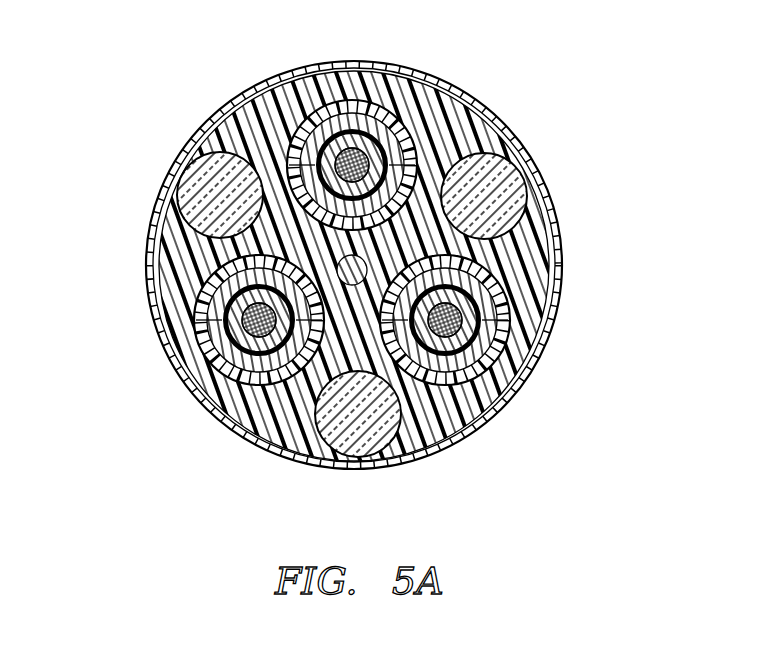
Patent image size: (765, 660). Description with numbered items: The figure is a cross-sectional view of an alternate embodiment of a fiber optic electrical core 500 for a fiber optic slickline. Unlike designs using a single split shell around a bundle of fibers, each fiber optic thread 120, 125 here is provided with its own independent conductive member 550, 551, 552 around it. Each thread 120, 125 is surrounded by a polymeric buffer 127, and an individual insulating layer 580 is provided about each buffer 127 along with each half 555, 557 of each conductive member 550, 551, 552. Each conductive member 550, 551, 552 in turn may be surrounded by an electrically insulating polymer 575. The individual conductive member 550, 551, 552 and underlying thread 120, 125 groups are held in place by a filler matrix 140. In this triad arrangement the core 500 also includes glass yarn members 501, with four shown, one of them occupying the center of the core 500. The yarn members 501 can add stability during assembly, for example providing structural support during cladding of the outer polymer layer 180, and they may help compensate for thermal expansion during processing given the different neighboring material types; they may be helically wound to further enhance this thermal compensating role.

The core 500 is at (351, 247).
The conductive member 551 is at (371, 123).
The fiber optic thread 125 is at (364, 152).
The filler matrix 140 is at (460, 124).
The glass yarn member 501 is at (197, 177).
The half of conductive member 555 is at (463, 253).
The conductive member 550 is at (510, 325).
The fiber optic thread 120 is at (250, 312).
The conductive member 552 is at (199, 316).
The electrically insulating polymer 575 is at (178, 347).
The insulating layer 580 is at (202, 388).
The polymeric buffer 127 is at (457, 332).
The half of conductive member 557 is at (473, 368).
The polymer layer 180 is at (443, 440).